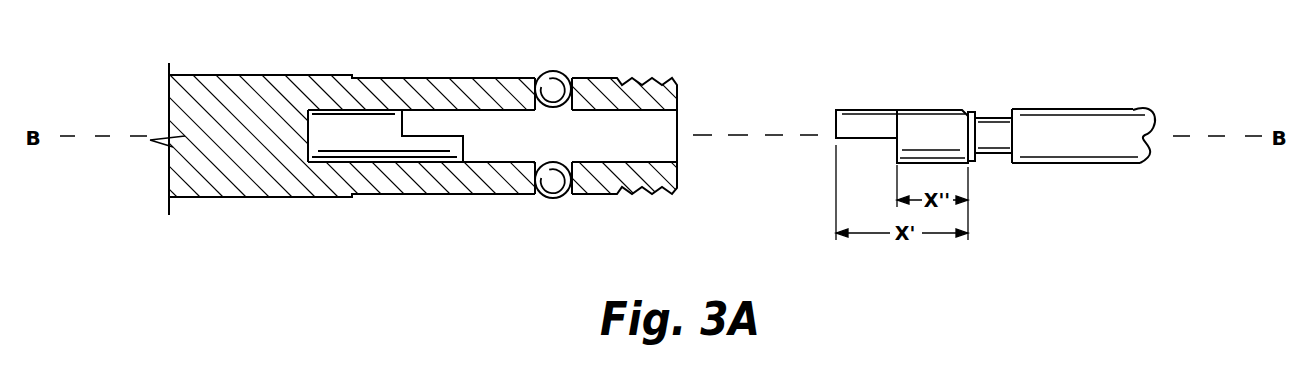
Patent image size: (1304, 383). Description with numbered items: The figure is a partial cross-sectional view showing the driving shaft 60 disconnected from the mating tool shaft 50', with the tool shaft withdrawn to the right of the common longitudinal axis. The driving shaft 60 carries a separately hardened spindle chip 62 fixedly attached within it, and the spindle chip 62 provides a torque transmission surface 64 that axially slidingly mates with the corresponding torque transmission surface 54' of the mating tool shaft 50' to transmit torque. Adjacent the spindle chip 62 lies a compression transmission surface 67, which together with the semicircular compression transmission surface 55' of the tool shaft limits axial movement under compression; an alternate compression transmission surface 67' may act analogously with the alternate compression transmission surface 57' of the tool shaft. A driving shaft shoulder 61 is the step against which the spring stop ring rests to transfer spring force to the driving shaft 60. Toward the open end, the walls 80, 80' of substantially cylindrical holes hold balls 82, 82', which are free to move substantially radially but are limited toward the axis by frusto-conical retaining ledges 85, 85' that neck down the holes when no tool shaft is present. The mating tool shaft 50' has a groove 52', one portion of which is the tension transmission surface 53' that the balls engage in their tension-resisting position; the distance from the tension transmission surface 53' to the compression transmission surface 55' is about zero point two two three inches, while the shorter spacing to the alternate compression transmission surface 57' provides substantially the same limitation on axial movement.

The driving shaft 60 is at (280, 198).
The driving shaft shoulder 61 is at (355, 195).
The spindle chip 62 is at (305, 128).
The torque transmission surface 64 is at (426, 134).
The compression transmission surface 67 is at (385, 98).
The alternate compression transmission surface 67' is at (487, 143).
The wall of substantially cylindrical hole 80 is at (551, 64).
The wall of substantially cylindrical hole 80' is at (553, 206).
The ball 82 is at (577, 77).
The ball 82' is at (586, 197).
The retaining ledge 85 is at (562, 125).
The retaining ledge 85' is at (542, 145).
The mating tool shaft 50' is at (1083, 112).
The groove 52' is at (1012, 158).
The tension transmission surface 53' is at (988, 101).
The torque transmission surface 54' is at (867, 156).
The compression transmission surface 55' is at (860, 109).
The alternate compression transmission surface 57' is at (902, 158).